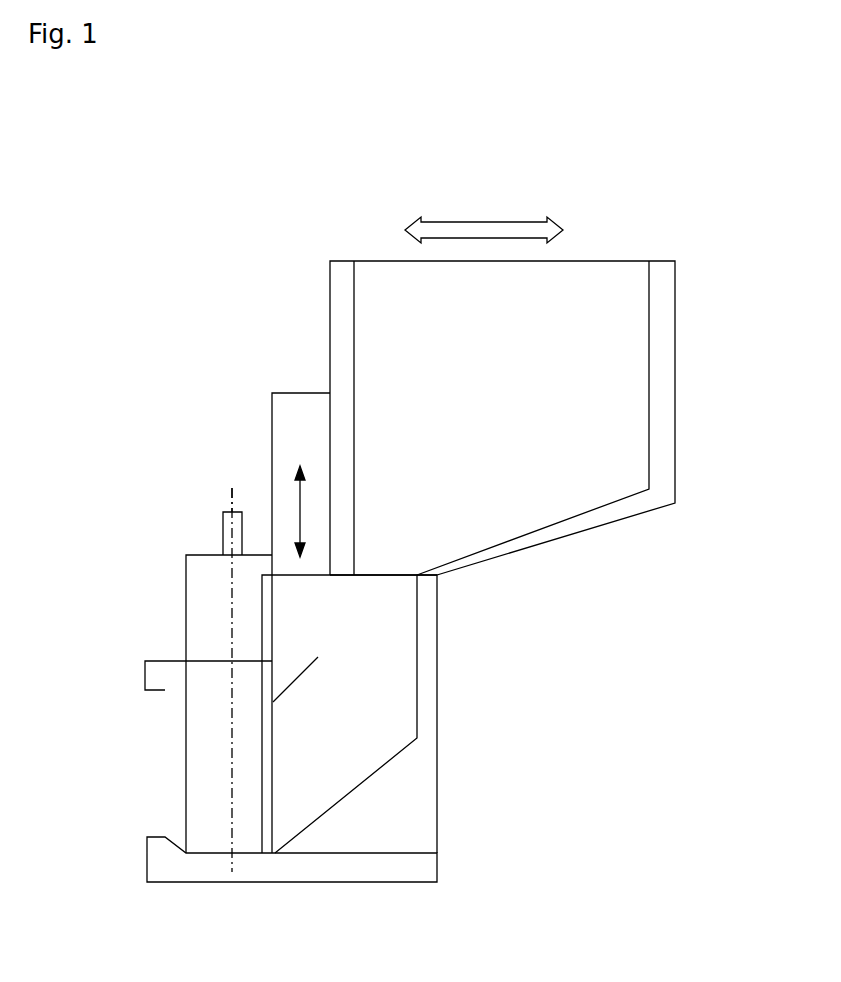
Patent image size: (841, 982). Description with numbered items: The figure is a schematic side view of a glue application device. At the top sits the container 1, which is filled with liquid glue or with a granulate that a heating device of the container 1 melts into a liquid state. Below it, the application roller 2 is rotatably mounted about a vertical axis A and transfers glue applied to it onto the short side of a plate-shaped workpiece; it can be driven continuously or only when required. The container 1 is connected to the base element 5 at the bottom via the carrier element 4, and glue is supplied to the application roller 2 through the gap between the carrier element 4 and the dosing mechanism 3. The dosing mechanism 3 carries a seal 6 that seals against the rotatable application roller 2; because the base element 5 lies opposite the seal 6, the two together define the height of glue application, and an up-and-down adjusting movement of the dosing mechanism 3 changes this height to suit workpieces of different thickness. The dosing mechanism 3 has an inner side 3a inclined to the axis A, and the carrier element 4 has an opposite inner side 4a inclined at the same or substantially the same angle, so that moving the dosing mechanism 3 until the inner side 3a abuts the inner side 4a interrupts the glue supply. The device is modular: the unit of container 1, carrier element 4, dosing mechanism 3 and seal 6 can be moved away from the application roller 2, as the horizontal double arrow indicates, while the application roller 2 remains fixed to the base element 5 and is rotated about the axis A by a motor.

The container 1 is at (651, 300).
The application roller 2 is at (197, 570).
The dosing mechanism 3 is at (280, 443).
The inner side of the dosing mechanism 3a is at (318, 657).
The carrier element 4 is at (425, 763).
The inner side of the carrier element 4a is at (367, 768).
The base element 5 is at (363, 868).
The seal 6 is at (158, 680).
The axis A is at (232, 488).